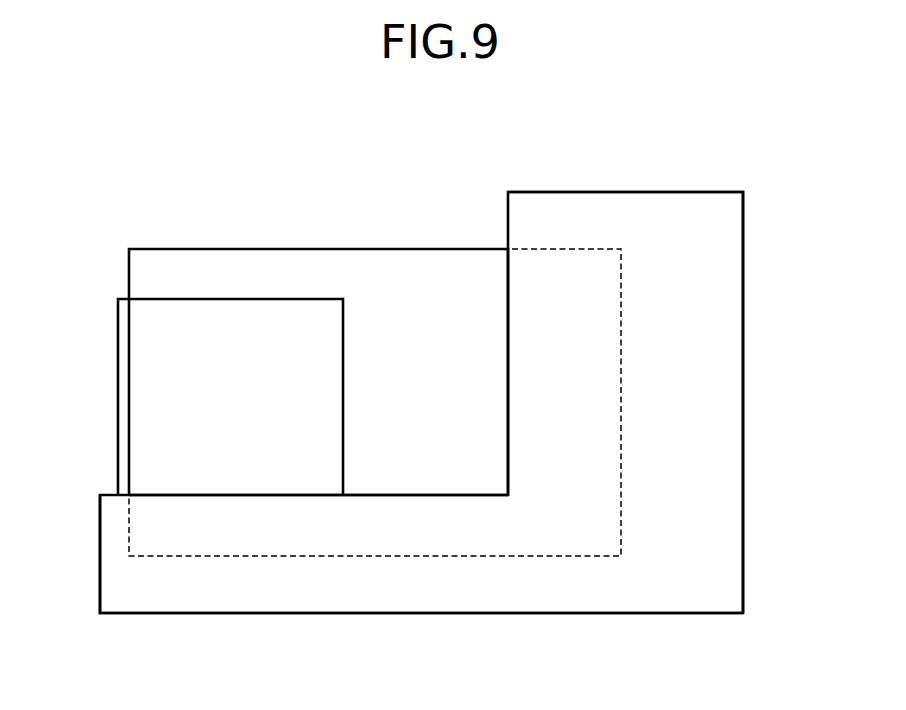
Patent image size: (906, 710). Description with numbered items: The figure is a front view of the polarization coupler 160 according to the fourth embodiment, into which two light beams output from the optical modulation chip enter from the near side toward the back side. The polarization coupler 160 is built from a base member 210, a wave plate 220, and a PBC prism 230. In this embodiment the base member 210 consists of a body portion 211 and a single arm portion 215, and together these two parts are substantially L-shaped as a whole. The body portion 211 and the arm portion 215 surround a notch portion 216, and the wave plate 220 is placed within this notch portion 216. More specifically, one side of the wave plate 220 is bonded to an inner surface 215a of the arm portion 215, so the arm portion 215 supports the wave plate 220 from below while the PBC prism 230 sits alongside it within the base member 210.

The polarization coupler 160 is at (738, 152).
The base member 210 is at (680, 192).
The body portion 211 is at (743, 622).
The arm portion 215 is at (505, 622).
The inner surface 215a is at (424, 495).
The notch portion 216 is at (467, 220).
The wave plate 220 is at (118, 352).
The PBC prism 230 is at (217, 249).